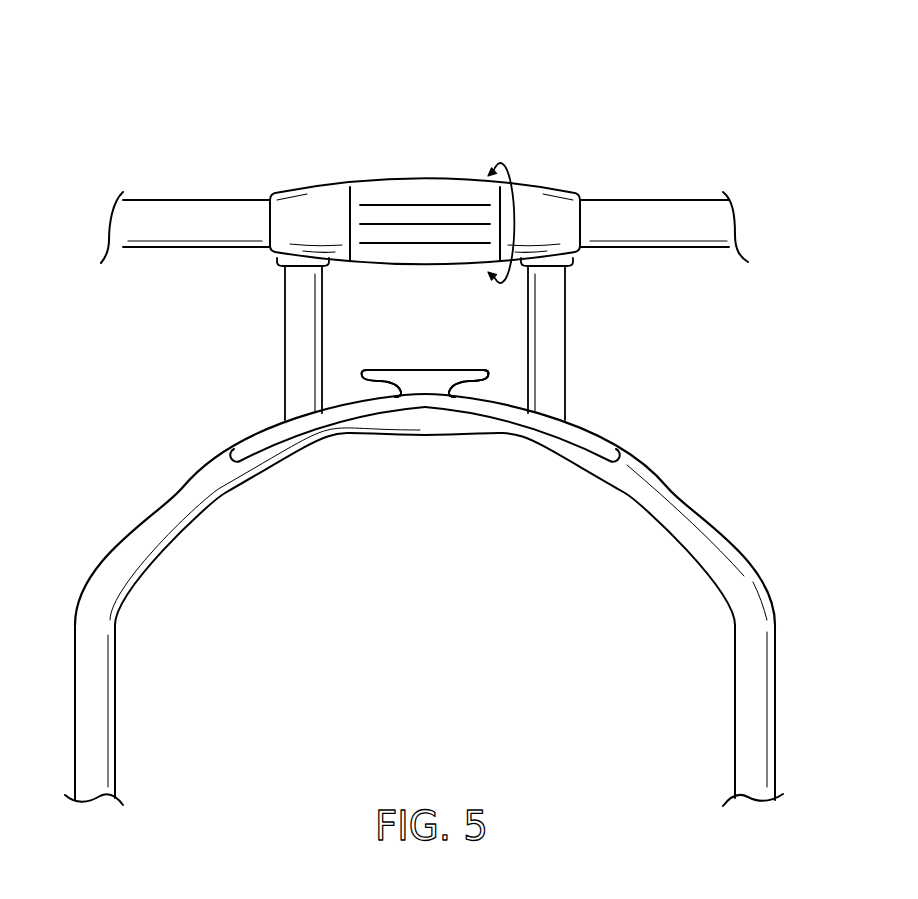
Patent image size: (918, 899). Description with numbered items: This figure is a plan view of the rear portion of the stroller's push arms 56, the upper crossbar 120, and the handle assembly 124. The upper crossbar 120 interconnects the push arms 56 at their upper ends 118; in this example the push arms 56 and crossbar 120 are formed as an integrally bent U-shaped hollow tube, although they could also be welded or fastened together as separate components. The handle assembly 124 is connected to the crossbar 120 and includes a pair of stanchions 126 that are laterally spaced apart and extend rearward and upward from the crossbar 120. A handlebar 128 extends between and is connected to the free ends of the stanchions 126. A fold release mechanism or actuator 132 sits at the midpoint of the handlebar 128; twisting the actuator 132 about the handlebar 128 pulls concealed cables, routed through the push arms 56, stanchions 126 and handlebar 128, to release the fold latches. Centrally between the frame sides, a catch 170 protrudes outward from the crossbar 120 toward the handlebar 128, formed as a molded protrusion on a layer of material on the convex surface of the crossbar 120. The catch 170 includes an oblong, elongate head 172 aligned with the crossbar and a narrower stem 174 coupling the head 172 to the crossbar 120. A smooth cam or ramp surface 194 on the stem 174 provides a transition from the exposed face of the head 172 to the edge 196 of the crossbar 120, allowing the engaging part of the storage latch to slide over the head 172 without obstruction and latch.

The handle assembly 124 is at (660, 122).
The handlebar 128 is at (203, 212).
The fold release mechanism or actuator 132 is at (425, 180).
The stanchions 126 is at (297, 344).
The catch 170 is at (388, 352).
The head 172 is at (424, 370).
The stem 174 is at (458, 388).
The cam or ramp surface 194 is at (420, 396).
The edge of the crossbar 196 is at (323, 430).
The upper crossbar 120 is at (256, 478).
The upper ends 118 is at (121, 670).
The push arms 56 is at (100, 785).